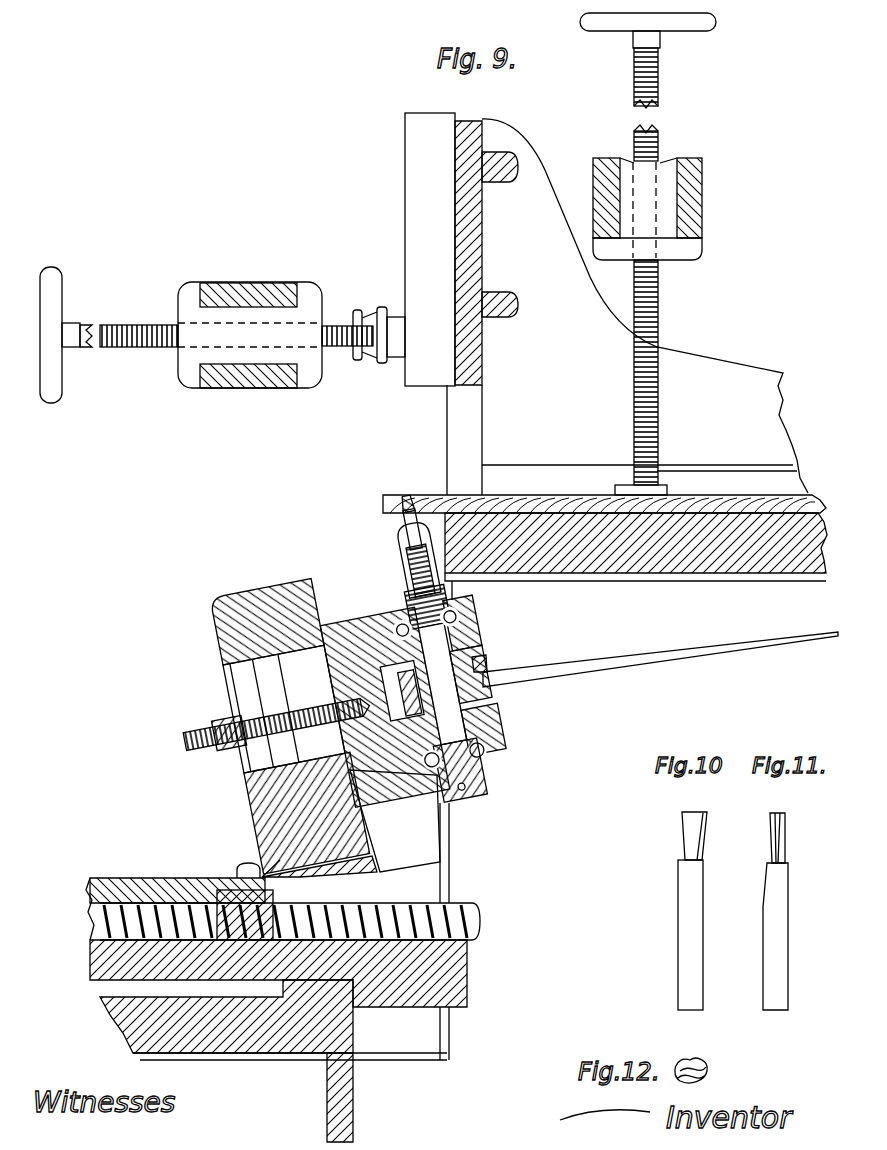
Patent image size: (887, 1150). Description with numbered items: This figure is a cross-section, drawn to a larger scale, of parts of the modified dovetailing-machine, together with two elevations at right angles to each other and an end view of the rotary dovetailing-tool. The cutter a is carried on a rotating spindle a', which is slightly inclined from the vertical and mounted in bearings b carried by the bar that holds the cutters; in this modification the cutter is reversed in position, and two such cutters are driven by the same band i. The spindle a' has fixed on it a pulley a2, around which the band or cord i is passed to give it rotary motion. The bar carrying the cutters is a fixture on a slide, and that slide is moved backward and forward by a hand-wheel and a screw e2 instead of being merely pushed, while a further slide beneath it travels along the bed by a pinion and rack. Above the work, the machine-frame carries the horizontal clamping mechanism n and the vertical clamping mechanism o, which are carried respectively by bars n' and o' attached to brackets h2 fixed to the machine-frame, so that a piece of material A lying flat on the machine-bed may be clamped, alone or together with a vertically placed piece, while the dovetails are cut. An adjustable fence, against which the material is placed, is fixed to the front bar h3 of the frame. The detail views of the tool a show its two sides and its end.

In FIG. 9, the horizontal clamping mechanism n is at (648, 254).
In FIG. 9, the bar carrying horizontal clamping mechanism n' is at (660, 209).
In FIG. 9, the front bar h3 is at (483, 308).
In FIG. 9, the brackets h2 is at (645, 306).
In FIG. 9, the piece of material A is at (605, 538).
In FIG. 9, the vertical clamping mechanism o is at (222, 335).
In FIG. 9, the bar carrying vertical clamping mechanism o' is at (250, 325).
In FIG. 9, the rotating spindle a' is at (405, 631).
In FIG. 9, the dovetailing-tool a is at (367, 524).
In FIG. 10, the dovetailing-tool a is at (685, 911).
In FIG. 11, the dovetailing-tool a is at (770, 911).
In FIG. 9, the bearings b is at (480, 690).
In FIG. 9, the pulley a2 is at (482, 662).
In FIG. 9, the band or cord i is at (660, 659).
In FIG. 9, the screw e2 is at (290, 905).